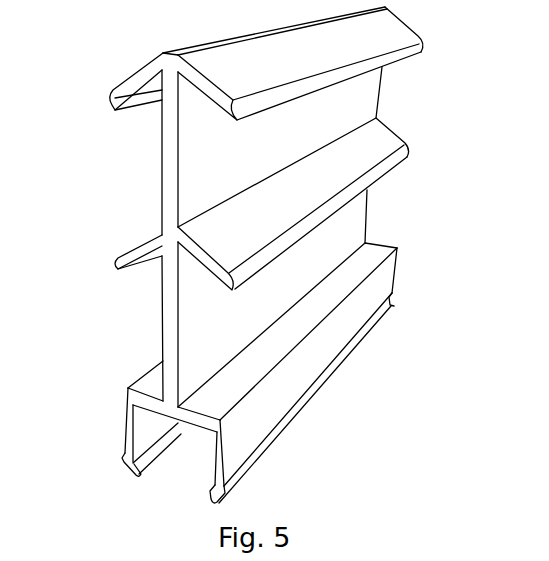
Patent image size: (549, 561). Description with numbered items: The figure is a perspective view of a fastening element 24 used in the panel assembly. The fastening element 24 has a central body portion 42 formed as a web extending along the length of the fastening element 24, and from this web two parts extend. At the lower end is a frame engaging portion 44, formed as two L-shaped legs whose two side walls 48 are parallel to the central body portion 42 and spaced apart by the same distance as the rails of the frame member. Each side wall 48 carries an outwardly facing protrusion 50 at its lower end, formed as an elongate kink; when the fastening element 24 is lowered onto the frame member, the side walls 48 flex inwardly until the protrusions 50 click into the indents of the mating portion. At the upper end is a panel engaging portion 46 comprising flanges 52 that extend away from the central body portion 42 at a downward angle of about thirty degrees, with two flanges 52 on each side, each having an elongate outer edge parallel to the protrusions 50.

The fastening element 24 is at (200, 44).
The central body portion 42 is at (168, 170).
The frame engaging portion 44 is at (133, 404).
The panel engaging portion 46 is at (423, 50).
The side walls 48 is at (132, 428).
The protrusion 50 is at (133, 468).
The flanges 52 is at (140, 79).